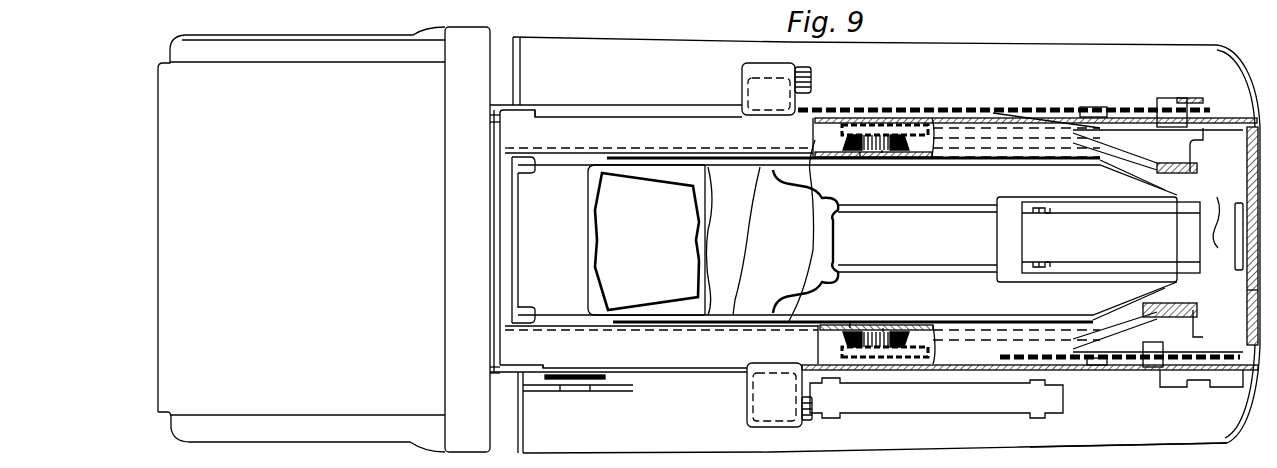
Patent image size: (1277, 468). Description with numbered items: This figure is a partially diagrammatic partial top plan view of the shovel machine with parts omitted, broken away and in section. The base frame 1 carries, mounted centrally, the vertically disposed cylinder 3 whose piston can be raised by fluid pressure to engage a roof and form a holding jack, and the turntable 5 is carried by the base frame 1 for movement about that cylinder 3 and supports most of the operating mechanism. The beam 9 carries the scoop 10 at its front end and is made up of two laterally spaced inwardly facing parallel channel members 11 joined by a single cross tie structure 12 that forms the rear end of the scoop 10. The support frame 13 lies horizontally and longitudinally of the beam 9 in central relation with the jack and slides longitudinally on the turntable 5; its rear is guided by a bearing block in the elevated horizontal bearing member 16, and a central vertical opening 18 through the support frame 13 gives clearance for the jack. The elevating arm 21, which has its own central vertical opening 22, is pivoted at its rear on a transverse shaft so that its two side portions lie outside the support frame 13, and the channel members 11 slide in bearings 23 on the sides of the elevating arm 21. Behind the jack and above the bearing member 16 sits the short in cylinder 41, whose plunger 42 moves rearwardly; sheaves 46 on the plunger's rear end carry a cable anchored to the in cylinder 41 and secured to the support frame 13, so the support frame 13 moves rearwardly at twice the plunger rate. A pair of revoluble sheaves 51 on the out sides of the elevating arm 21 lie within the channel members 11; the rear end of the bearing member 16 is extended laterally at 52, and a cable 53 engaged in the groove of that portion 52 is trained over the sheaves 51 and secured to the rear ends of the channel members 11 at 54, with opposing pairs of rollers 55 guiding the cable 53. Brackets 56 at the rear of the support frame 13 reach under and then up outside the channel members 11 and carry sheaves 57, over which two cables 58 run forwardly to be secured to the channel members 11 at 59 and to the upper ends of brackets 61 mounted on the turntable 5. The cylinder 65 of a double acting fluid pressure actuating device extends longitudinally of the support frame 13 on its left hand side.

The base frame 1 is at (1090, 443).
The vertically disposed cylinder 3 is at (753, 241).
The turntable 5 is at (1140, 437).
The beam 9 is at (860, 158).
The scoop 10 is at (367, 430).
The channel members 11 is at (882, 153).
The cross tie structure 12 is at (462, 343).
The support frame 13 is at (528, 267).
The bearing member 16 is at (1245, 216).
The central vertical opening 18 is at (725, 263).
The elevating arm 21 is at (505, 297).
The central vertical opening 22 is at (801, 231).
The bearings 23 is at (538, 108).
The in cylinder 41 is at (975, 241).
The plunger 42 is at (1111, 237).
The sheaves 46 is at (1215, 229).
The revoluble sheaves 51 is at (880, 117).
The laterally extended portion 52 is at (1258, 246).
The cable 53 is at (1258, 280).
The cable securing points 54 is at (1150, 108).
The rollers 55 is at (1240, 123).
The brackets 56 is at (1197, 387).
The sheaves 57 is at (1227, 387).
The cables 58 is at (977, 108).
The cable securing points 59 is at (1095, 107).
The brackets 61 is at (792, 65).
The cylinder 65 is at (967, 412).